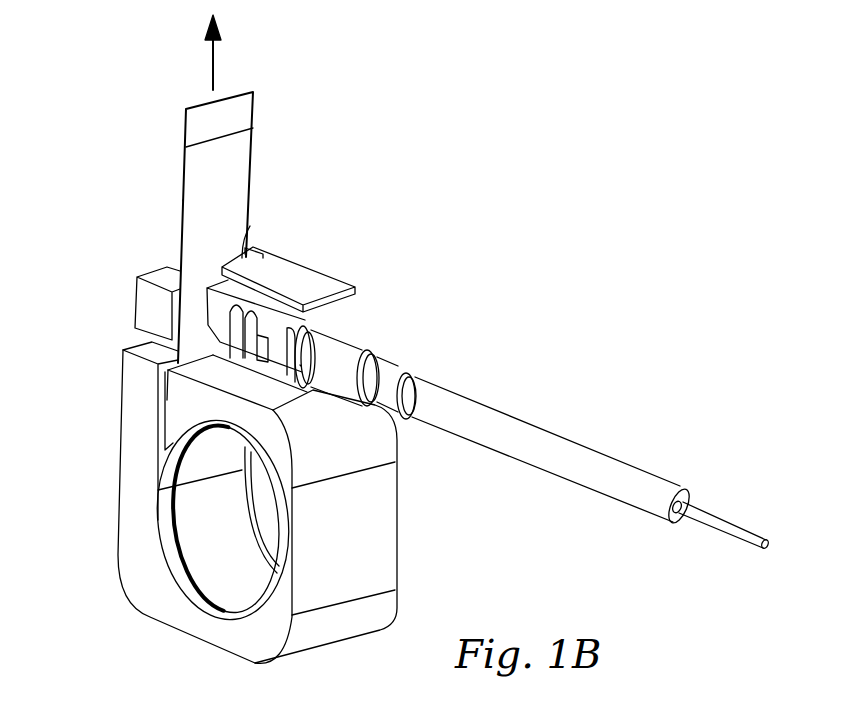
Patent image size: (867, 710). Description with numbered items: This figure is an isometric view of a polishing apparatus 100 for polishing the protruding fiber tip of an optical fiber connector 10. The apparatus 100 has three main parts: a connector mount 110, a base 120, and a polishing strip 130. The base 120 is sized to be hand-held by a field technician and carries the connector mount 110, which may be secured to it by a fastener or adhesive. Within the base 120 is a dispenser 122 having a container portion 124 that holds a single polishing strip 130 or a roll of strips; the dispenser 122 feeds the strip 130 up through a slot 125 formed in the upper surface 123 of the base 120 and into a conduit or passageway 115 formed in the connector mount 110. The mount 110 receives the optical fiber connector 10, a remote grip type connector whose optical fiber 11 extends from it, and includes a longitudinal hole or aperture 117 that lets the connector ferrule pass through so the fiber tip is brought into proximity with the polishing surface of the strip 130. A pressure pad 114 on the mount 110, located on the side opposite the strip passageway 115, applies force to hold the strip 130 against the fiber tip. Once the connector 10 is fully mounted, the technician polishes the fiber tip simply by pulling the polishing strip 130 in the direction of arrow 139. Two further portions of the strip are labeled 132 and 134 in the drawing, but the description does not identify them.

The polishing apparatus 100 is at (497, 310).
The optical fiber connector 10 is at (352, 313).
The optical fiber 11 is at (710, 520).
The connector mount 110 is at (300, 272).
The pressure pad 114 is at (133, 302).
The passageway 115 is at (250, 235).
The aperture 117 is at (350, 318).
The base 120 is at (392, 567).
The dispenser 122 is at (173, 392).
The upper surface 123 is at (268, 405).
The container portion 124 is at (202, 523).
The slot 125 is at (158, 428).
The polishing strip 130 is at (186, 120).
The strip end portion 132 is at (241, 118).
The strip body 134 is at (242, 176).
The arrow 139 is at (212, 58).